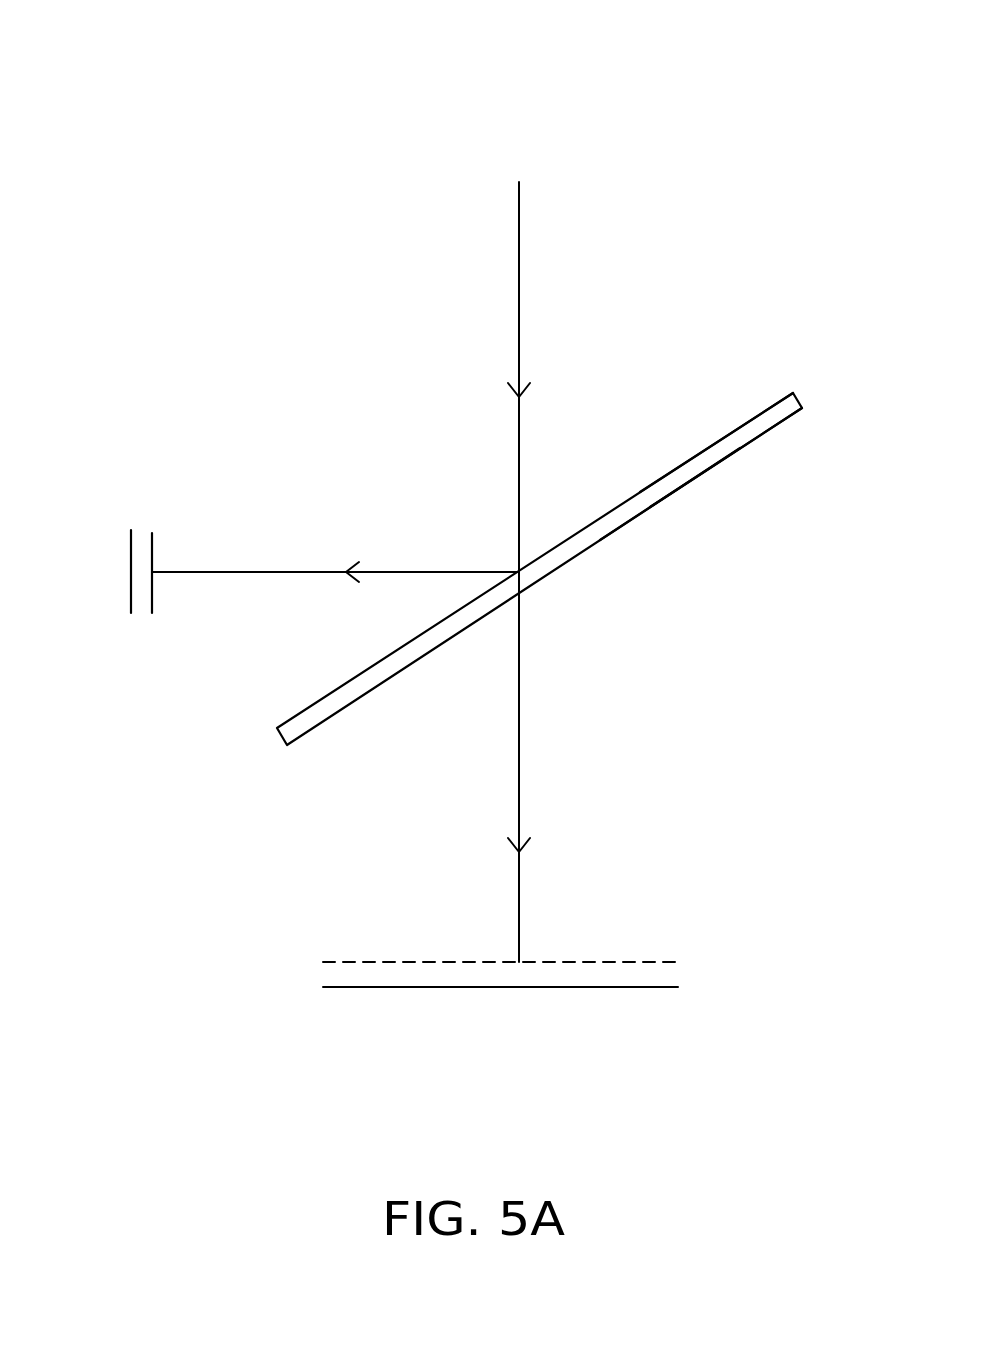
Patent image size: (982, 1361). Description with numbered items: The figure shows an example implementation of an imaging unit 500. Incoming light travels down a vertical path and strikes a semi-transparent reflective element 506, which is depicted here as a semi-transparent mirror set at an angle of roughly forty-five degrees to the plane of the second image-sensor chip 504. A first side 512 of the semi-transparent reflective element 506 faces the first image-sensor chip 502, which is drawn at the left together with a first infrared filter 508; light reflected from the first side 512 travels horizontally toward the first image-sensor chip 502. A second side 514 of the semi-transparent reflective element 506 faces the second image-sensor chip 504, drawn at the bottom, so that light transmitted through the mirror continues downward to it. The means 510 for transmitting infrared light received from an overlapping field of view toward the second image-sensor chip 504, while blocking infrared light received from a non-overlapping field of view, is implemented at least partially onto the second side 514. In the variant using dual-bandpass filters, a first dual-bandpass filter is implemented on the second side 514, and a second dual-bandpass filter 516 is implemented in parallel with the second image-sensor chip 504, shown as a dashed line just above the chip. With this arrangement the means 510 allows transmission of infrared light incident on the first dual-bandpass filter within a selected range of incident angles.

The imaging unit 500 is at (733, 62).
The first image-sensor chip 502 is at (90, 543).
The second image-sensor chip 504 is at (567, 967).
The semi-transparent reflective element 506 is at (539, 514).
The first infrared filter 508 is at (114, 513).
The means for transmitting infrared light 510 is at (761, 477).
The first side 512 is at (712, 402).
The second side 514 is at (708, 513).
The second dual-bandpass filter 516 is at (561, 924).